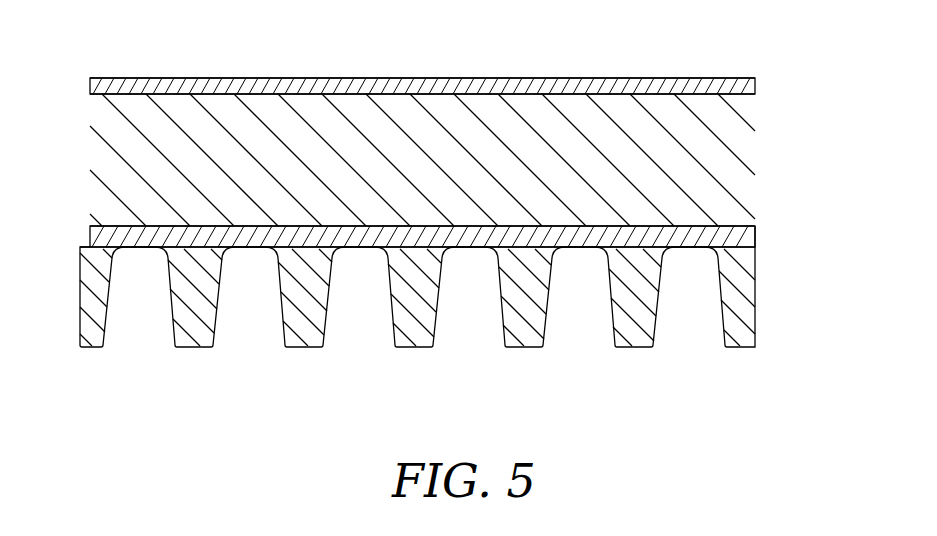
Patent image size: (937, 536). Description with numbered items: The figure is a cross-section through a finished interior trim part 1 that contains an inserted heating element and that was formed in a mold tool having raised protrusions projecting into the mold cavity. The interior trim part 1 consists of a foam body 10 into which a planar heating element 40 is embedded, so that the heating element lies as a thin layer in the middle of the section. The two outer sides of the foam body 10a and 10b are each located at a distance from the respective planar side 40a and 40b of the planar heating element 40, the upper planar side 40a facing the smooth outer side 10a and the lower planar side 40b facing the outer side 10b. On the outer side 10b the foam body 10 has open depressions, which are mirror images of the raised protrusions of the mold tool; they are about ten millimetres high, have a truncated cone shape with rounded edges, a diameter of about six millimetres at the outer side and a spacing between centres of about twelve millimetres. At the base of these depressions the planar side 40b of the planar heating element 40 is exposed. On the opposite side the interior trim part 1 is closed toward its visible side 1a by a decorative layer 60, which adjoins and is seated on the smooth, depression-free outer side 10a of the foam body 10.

The interior trim part 1 is at (755, 78).
The visible side 1a is at (646, 78).
The foam body 10 is at (847, 94).
The outer side of the foam body 10a is at (549, 78).
The outer side of the foam body 10b is at (523, 347).
The planar heating element 40 is at (90, 236).
The planar side of the planar heating element 40a is at (318, 226).
The planar side of the planar heating element 40b is at (317, 247).
The decorative layer 60 is at (90, 87).